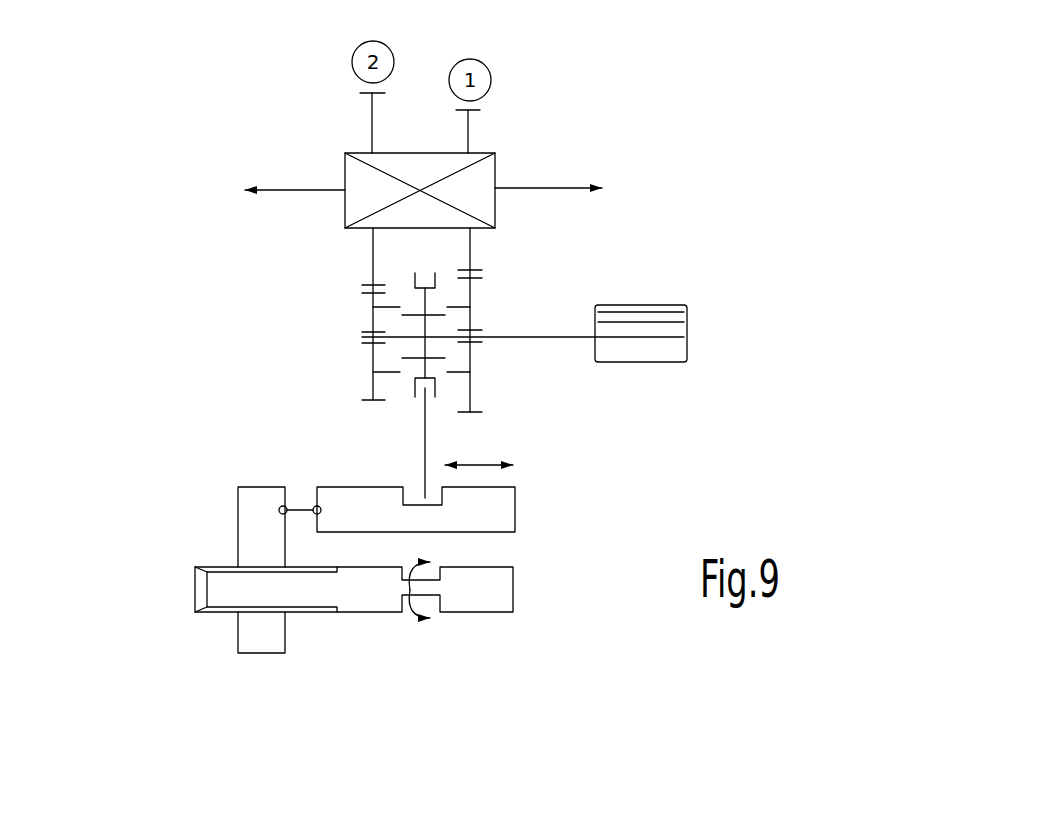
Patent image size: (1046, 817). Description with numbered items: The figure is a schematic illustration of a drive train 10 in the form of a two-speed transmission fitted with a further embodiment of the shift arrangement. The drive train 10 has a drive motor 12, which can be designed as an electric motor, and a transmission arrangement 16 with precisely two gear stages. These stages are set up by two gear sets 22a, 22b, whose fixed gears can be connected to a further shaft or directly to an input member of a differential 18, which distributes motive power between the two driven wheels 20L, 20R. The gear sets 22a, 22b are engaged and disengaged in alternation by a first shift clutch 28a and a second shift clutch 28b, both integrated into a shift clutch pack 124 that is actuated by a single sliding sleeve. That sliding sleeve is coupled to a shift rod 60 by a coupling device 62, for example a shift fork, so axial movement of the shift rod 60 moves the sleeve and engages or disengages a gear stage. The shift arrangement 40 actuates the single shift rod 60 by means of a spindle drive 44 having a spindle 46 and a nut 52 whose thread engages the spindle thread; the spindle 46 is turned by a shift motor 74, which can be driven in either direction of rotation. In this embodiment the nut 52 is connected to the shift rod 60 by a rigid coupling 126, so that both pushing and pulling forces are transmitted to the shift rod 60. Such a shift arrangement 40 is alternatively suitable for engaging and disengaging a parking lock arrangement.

The drive train 10 is at (746, 126).
The drive motor 12 is at (675, 351).
The transmission arrangement 16 is at (470, 294).
The differential 18 is at (480, 173).
The driven wheel 20L is at (300, 190).
The driven wheel 20R is at (552, 187).
The gear set 22a is at (503, 292).
The gear set 22b is at (335, 288).
The first shift clutch 28a is at (378, 284).
The second shift clutch 28b is at (390, 357).
The shift arrangement 40 is at (535, 462).
The spindle drive 44 is at (334, 551).
The spindle 46 is at (397, 624).
The nut 52 is at (253, 535).
The shift rod 60 is at (502, 508).
The coupling device 62 is at (423, 438).
The shift motor 74 is at (498, 587).
The shift clutch pack 124 is at (415, 265).
The rigid coupling 126 is at (300, 507).